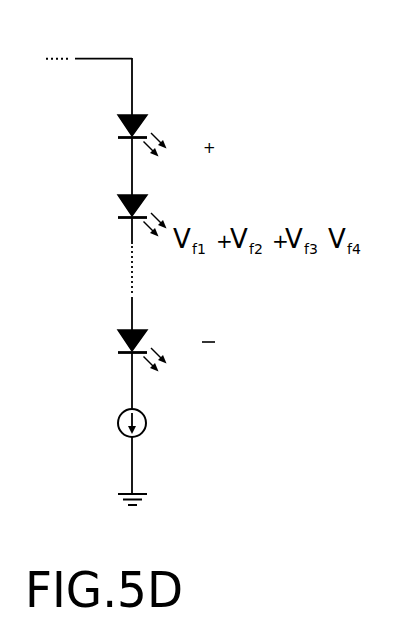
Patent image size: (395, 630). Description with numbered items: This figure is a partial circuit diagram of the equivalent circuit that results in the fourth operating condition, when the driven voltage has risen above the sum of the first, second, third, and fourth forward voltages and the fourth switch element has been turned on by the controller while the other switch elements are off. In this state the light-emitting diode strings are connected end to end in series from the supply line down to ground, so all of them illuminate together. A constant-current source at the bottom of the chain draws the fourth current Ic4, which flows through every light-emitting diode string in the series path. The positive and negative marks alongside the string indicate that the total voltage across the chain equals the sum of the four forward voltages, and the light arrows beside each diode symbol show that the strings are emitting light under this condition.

The fourth current Ic4 is at (148, 425).